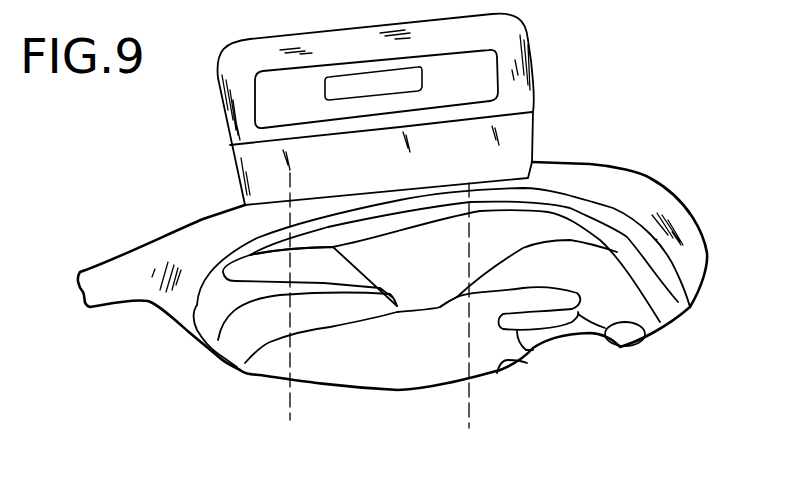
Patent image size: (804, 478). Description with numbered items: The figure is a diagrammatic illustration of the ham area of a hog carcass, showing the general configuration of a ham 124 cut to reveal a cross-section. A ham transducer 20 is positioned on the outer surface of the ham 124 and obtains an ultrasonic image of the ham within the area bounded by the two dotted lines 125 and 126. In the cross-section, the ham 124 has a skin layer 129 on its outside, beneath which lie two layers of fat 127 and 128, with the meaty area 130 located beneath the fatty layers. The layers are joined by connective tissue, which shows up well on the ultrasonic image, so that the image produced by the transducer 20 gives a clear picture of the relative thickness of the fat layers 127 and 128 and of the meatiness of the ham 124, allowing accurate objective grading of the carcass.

The ham transducer 20 is at (535, 86).
The ham 124 is at (650, 178).
The dotted line 125 is at (291, 418).
The dotted line 126 is at (468, 414).
The layer of fat 127 is at (673, 297).
The layer of fat 128 is at (663, 307).
The skin layer 129 is at (684, 262).
The meaty area 130 is at (315, 351).